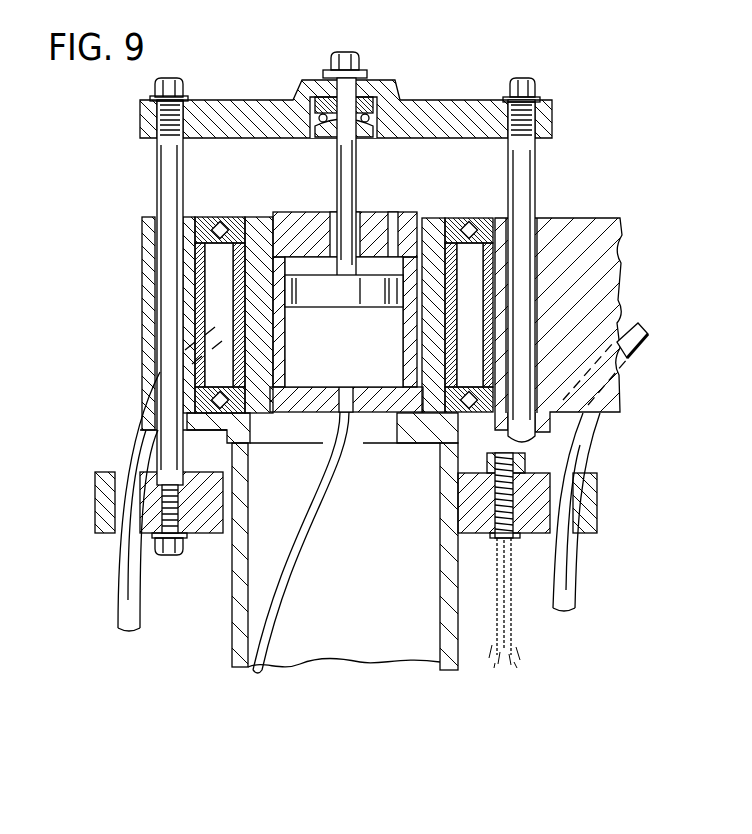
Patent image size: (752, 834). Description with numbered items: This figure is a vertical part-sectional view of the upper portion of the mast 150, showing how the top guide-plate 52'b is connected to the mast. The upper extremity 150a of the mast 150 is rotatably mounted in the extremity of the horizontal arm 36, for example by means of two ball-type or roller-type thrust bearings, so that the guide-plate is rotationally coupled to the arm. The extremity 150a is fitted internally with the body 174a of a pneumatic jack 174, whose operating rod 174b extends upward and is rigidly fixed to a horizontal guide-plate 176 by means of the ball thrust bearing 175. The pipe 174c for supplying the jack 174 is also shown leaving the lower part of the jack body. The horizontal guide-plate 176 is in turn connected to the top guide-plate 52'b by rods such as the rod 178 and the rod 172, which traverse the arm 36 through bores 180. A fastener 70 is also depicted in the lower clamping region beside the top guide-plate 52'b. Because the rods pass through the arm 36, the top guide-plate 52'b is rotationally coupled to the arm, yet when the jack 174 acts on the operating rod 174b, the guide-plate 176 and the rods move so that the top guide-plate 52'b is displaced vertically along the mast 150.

The horizontal guide-plate 176 is at (450, 117).
The ball thrust bearing 175 is at (385, 118).
The rod 178 is at (163, 180).
The right tie bolt 172 is at (488, 207).
The bore 180 is at (555, 240).
The horizontal arm 36 is at (596, 297).
The mast 150 is at (237, 627).
The upper extremity of the mast 150a is at (476, 212).
The pneumatic jack 174 is at (407, 204).
The body of the pneumatic jack 174a is at (403, 353).
The operating rod 174b is at (342, 172).
The pipe 174c is at (300, 537).
The clamp bolt 70 is at (507, 625).
The top guide-plate 52'b is at (594, 512).